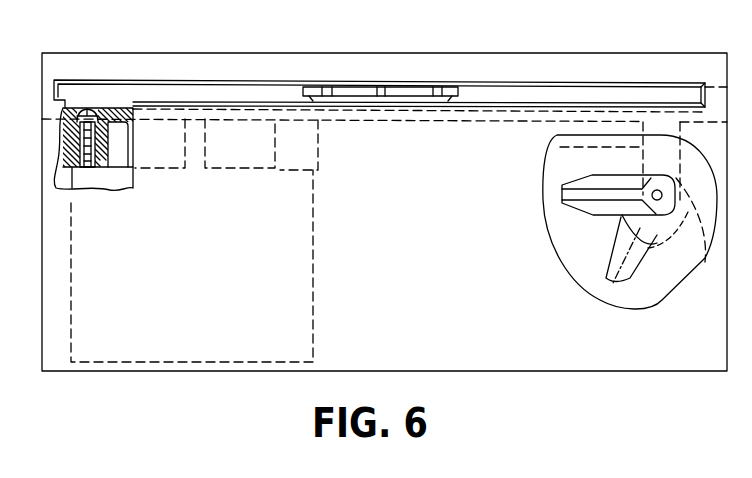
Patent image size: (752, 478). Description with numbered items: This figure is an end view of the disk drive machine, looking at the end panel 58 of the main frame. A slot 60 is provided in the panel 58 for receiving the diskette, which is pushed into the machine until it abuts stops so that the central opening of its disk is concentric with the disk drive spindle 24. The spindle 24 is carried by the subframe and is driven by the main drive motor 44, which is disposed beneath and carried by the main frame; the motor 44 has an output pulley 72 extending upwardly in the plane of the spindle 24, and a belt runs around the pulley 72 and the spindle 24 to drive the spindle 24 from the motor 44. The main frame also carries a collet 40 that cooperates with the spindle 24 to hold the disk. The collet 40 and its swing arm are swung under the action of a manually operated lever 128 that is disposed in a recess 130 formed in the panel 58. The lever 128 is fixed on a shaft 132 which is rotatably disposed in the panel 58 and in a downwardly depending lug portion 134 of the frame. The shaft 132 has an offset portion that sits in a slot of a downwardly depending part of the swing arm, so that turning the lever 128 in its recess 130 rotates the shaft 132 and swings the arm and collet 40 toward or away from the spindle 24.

The disk drive spindle 24 is at (450, 102).
The collet 40 is at (360, 87).
The main drive motor 44 is at (319, 215).
The end panel 58 is at (413, 307).
The slot 60 is at (625, 92).
The output pulley 72 is at (185, 121).
The manually operated lever 128 is at (562, 192).
The recess 130 is at (664, 293).
The shaft 132 is at (696, 234).
The lug portion 134 is at (560, 147).